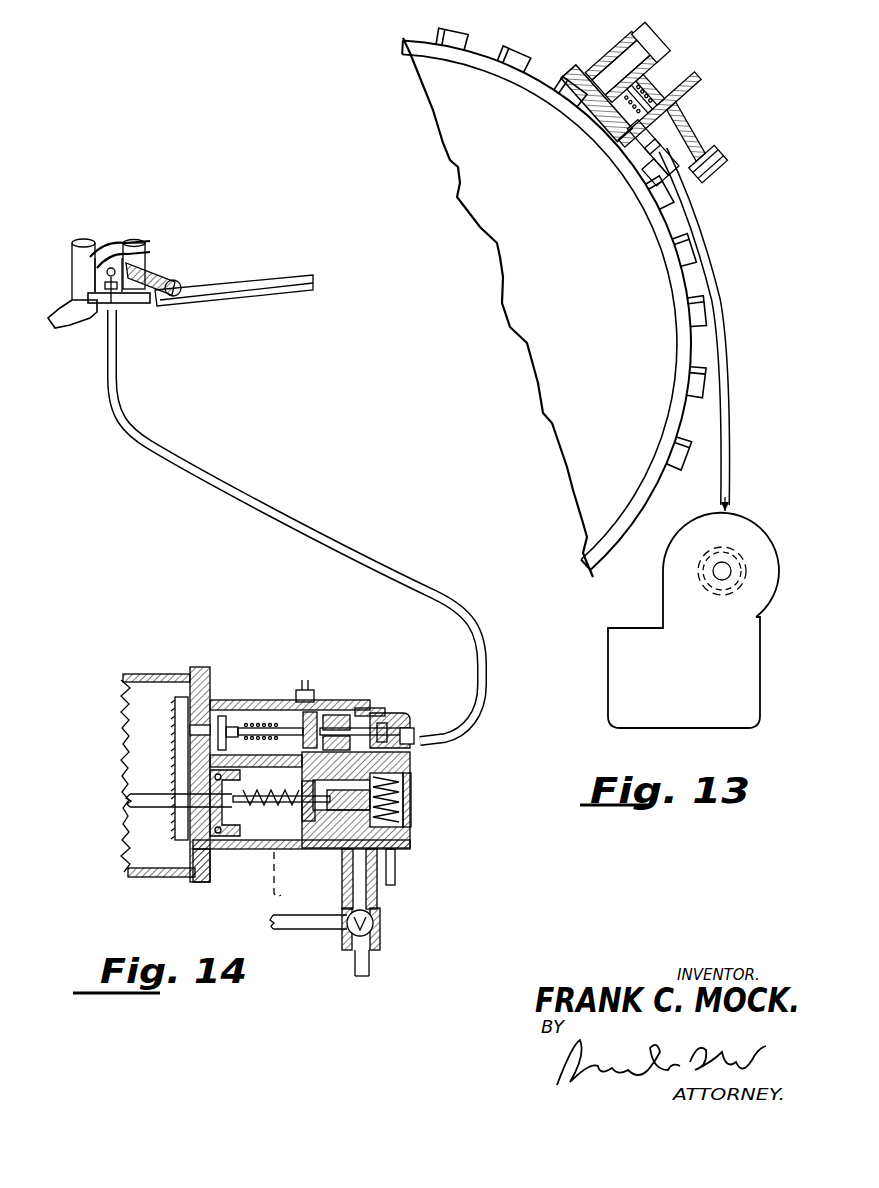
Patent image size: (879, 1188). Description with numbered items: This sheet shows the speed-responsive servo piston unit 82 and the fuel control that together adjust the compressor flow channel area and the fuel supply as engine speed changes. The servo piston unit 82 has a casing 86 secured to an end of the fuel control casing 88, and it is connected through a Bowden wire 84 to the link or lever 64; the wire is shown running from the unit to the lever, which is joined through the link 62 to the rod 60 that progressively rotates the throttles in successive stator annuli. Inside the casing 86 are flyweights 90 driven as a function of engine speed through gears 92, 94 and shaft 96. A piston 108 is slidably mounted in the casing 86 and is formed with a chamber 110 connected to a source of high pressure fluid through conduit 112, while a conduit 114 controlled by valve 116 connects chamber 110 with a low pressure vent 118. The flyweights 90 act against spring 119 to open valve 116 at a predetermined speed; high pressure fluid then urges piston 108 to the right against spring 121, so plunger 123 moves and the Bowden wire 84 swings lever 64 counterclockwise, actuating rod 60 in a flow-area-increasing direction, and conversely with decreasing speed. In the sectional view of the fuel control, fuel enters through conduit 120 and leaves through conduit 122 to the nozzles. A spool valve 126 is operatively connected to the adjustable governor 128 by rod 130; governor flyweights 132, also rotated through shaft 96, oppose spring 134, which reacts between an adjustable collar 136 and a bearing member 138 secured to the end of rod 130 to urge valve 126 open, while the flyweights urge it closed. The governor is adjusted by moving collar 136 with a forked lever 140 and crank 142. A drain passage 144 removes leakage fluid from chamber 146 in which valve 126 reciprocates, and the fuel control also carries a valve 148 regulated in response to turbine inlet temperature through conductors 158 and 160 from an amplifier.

In FIG. 13, the rod 60 is at (711, 168).
In FIG. 14, the rod 60 is at (240, 283).
In FIG. 13, the link 62 is at (686, 131).
In FIG. 14, the link 62 is at (150, 276).
In FIG. 13, the link 64 is at (667, 67).
In FIG. 14, the link 64 is at (103, 247).
In FIG. 13, the servo piston unit 82 is at (777, 501).
In FIG. 14, the servo piston unit 82 is at (363, 696).
In FIG. 13, the Bowden wire 84 is at (728, 411).
In FIG. 14, the Bowden wire 84 is at (274, 514).
In FIG. 13, the casing 86 is at (762, 531).
In FIG. 14, the casing 86 is at (199, 668).
In FIG. 13, the fuel control casing 88 is at (741, 729).
In FIG. 14, the fuel control casing 88 is at (414, 798).
In FIG. 14, the flyweights 90 is at (229, 722).
In FIG. 14, the gear 92 is at (184, 710).
In FIG. 13, the gear 94 is at (742, 586).
In FIG. 14, the gear 94 is at (188, 793).
In FIG. 13, the shaft 96 is at (716, 572).
In FIG. 14, the shaft 96 is at (130, 809).
In FIG. 14, the piston 108 is at (333, 714).
In FIG. 14, the chamber 110 is at (320, 714).
In FIG. 14, the conduit 112 is at (314, 712).
In FIG. 14, the conduit 114 is at (290, 711).
In FIG. 14, the valve 116 is at (297, 714).
In FIG. 14, the low pressure vent 118 is at (277, 700).
In FIG. 14, the spring 119 is at (250, 716).
In FIG. 14, the conduit 120 is at (340, 843).
In FIG. 14, the spring 121 is at (372, 712).
In FIG. 14, the conduit 122 is at (302, 924).
In FIG. 14, the plunger 123 is at (396, 714).
In FIG. 14, the spool valve 126 is at (405, 772).
In FIG. 14, the adjustable governor 128 is at (184, 878).
In FIG. 14, the rod 130 is at (256, 830).
In FIG. 14, the flyweights 132 is at (203, 862).
In FIG. 14, the spring 134 is at (232, 838).
In FIG. 14, the adjustable collar 136 is at (286, 779).
In FIG. 14, the bearing member 138 is at (232, 788).
In FIG. 14, the forked lever 140 is at (274, 851).
In FIG. 14, the crank 142 is at (295, 884).
In FIG. 14, the drain passage 144 is at (396, 872).
In FIG. 14, the chamber 146 is at (409, 826).
In FIG. 14, the valve 148 is at (373, 927).
In FIG. 14, the conductor 158 is at (377, 960).
In FIG. 14, the conductor 160 is at (357, 960).